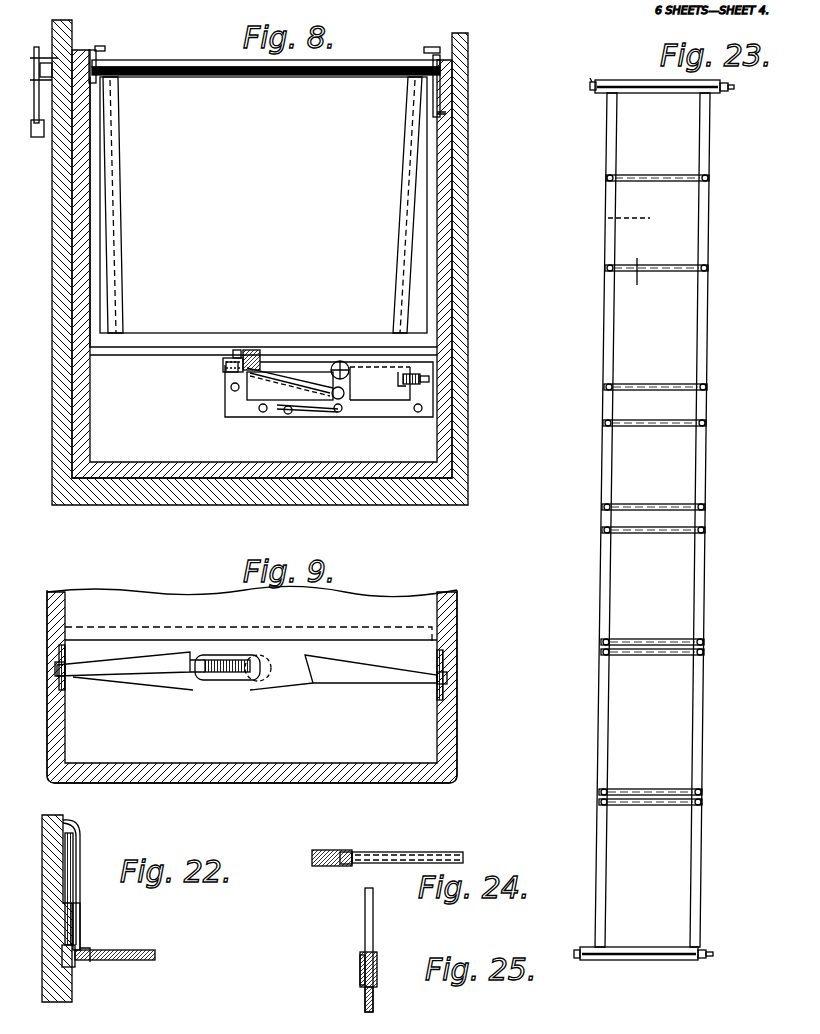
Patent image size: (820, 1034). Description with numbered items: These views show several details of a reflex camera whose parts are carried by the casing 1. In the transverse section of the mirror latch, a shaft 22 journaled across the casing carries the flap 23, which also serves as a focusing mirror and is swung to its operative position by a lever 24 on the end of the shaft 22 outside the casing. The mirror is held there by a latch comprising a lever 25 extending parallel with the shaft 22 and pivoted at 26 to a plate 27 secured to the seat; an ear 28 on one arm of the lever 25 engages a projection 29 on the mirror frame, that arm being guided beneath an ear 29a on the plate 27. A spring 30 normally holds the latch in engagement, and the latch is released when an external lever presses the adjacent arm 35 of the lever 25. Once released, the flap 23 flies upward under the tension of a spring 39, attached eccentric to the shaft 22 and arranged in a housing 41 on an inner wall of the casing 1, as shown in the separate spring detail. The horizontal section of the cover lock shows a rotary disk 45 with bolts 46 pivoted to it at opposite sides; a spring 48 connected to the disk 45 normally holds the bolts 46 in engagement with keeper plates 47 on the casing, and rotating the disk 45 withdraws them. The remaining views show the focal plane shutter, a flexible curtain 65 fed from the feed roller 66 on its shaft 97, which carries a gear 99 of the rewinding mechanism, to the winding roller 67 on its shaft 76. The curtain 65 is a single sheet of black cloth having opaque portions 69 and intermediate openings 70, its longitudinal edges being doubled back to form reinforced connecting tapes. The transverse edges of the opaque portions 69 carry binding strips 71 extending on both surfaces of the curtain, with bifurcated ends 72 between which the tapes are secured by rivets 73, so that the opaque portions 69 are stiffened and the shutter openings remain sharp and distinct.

In FIG. 8, the casing 1 is at (298, 506).
In FIG. 9, the casing 1 is at (448, 732).
In FIG. 22, the casing 1 is at (48, 950).
In FIG. 8, the shaft 22 is at (90, 56).
In FIG. 8, the flap 23 is at (263, 216).
In FIG. 22, the flap 23 is at (125, 953).
In FIG. 8, the lever 24 is at (37, 138).
In FIG. 23, the lever 24 is at (608, 218).
In FIG. 8, the lever 25 is at (305, 364).
In FIG. 23, the lever 25 is at (635, 271).
In FIG. 8, the pivot 26 is at (341, 367).
In FIG. 8, the plate 27 is at (365, 416).
In FIG. 8, the ear 28 is at (255, 350).
In FIG. 8, the projection 29 is at (236, 356).
In FIG. 8, the ear 29a is at (231, 369).
In FIG. 8, the spring 30 is at (312, 406).
In FIG. 8, the arm 35 is at (400, 381).
In FIG. 22, the spring 39 is at (80, 898).
In FIG. 22, the housing 41 is at (81, 870).
In FIG. 9, the rotary disk 45 is at (250, 652).
In FIG. 9, the bolts 46 is at (280, 655).
In FIG. 9, the keeper plates 47 is at (66, 688).
In FIG. 9, the spring 48 is at (228, 674).
In FIG. 24, the flexible curtain 65 is at (320, 866).
In FIG. 25, the flexible curtain 65 is at (373, 932).
In FIG. 23, the flexible curtain 65 is at (704, 464).
In FIG. 23, the feed roller 66 is at (648, 957).
In FIG. 23, the winding roller 67 is at (624, 86).
In FIG. 25, the opaque portions 69 is at (373, 1000).
In FIG. 23, the opaque portions 69 is at (669, 520).
In FIG. 23, the openings 70 is at (643, 792).
In FIG. 25, the binding strips 71 is at (377, 968).
In FIG. 23, the binding strips 71 is at (684, 273).
In FIG. 24, the bifurcated ends 72 is at (348, 853).
In FIG. 25, the bifurcated ends 72 is at (362, 975).
In FIG. 23, the bifurcated ends 72 is at (708, 270).
In FIG. 24, the rivets 73 is at (333, 850).
In FIG. 23, the shaft 76 is at (591, 81).
In FIG. 23, the shaft 97 is at (704, 950).
In FIG. 23, the gear 99 is at (711, 957).